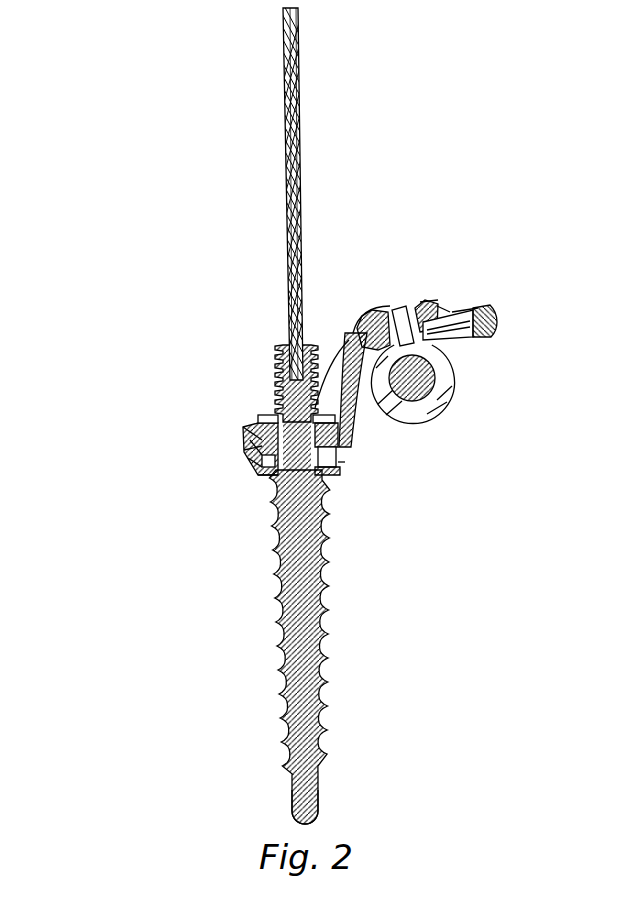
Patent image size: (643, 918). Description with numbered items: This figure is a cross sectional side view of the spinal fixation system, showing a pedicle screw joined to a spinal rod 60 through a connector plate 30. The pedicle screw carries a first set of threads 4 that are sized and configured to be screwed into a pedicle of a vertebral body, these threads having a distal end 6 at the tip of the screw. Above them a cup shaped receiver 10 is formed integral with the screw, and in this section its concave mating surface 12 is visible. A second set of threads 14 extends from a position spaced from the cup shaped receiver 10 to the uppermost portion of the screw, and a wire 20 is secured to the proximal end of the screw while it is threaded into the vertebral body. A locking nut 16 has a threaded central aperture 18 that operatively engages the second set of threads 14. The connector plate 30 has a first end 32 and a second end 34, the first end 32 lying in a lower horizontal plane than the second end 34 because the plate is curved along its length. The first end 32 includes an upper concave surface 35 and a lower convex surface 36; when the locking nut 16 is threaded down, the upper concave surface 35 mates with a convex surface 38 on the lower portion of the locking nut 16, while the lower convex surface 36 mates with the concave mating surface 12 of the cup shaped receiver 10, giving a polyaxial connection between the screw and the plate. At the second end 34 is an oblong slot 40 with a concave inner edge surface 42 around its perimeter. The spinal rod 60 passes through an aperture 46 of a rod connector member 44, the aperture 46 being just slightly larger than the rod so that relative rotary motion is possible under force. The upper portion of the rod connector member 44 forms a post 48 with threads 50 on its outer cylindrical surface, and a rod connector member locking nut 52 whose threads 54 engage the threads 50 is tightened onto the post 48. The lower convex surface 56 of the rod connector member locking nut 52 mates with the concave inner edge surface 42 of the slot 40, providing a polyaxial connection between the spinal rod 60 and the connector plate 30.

The first set of threads 4 is at (328, 612).
The distal end 6 is at (320, 783).
The cup shaped receiver 10 is at (471, 322).
The concave mating surface 12 is at (156, 476).
The second set of threads 14 is at (277, 367).
The locking nut 16 is at (258, 416).
The threaded central aperture 18 is at (250, 447).
The wire 20 is at (286, 100).
The connector plate 30 is at (350, 428).
The first end 32 is at (250, 432).
The second end 34 is at (500, 318).
The upper concave surface 35 is at (257, 461).
The lower convex surface 36 is at (253, 457).
The convex surface 38 is at (343, 462).
The slot 40 is at (473, 310).
The concave inner edge surface 42 is at (453, 307).
The rod connector member 44 is at (452, 362).
The aperture 46 is at (414, 308).
The post 48 is at (386, 310).
The threads 50 is at (430, 308).
The rod connector member locking nut 52 is at (360, 308).
The threads 54 is at (357, 322).
The lower convex surface 56 is at (450, 310).
The spinal rod 60 is at (430, 379).